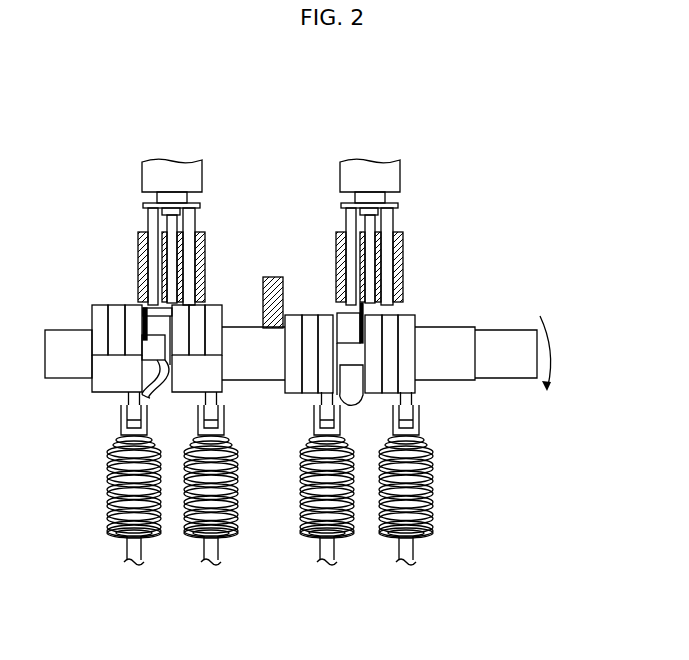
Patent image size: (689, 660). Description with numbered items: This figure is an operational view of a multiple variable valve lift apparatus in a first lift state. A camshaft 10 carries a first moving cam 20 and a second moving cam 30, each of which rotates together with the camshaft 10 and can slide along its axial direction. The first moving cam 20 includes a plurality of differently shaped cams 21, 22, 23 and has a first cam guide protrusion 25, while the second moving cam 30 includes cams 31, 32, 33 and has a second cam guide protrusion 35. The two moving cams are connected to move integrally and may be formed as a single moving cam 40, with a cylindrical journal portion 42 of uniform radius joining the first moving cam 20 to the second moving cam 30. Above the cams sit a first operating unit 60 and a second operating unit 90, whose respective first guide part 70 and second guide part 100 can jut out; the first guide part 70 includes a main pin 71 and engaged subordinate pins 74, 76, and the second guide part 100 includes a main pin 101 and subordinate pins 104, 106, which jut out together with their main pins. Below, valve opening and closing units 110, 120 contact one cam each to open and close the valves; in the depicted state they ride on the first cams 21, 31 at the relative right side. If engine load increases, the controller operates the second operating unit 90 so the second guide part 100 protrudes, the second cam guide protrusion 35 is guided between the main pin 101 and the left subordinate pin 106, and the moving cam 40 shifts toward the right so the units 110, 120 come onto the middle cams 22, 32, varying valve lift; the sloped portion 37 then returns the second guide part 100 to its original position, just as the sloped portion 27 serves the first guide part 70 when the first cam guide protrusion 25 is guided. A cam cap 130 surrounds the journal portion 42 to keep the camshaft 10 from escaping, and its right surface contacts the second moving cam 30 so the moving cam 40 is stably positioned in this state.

The camshaft 10 is at (63, 368).
The first moving cam 20 is at (156, 431).
The first cam 21 is at (133, 304).
The middle cam 22 is at (117, 304).
The cam 23 is at (97, 316).
The first cam guide protrusion 25 is at (163, 392).
The sloped portion 27 is at (155, 350).
The second moving cam 30 is at (380, 411).
The first cam 31 is at (325, 313).
The middle cam 32 is at (308, 313).
The cam 33 is at (290, 313).
The second cam guide protrusion 35 is at (348, 385).
The sloped portion 37 is at (356, 370).
The moving cam 40 is at (263, 424).
The journal portion 42 is at (262, 363).
The first operating unit 60 is at (205, 168).
The first guide part 70 is at (180, 256).
The main pin 71 is at (170, 240).
The subordinate pin 74 is at (188, 220).
The subordinate pin 76 is at (152, 220).
The second operating unit 90 is at (403, 168).
The second guide part 100 is at (392, 255).
The main pin 101 is at (368, 247).
The subordinate pin 104 is at (389, 218).
The left subordinate pin 106 is at (350, 218).
The valve opening and closing unit 110 is at (210, 565).
The valve opening and closing unit 120 is at (405, 565).
The cam cap 130 is at (273, 280).